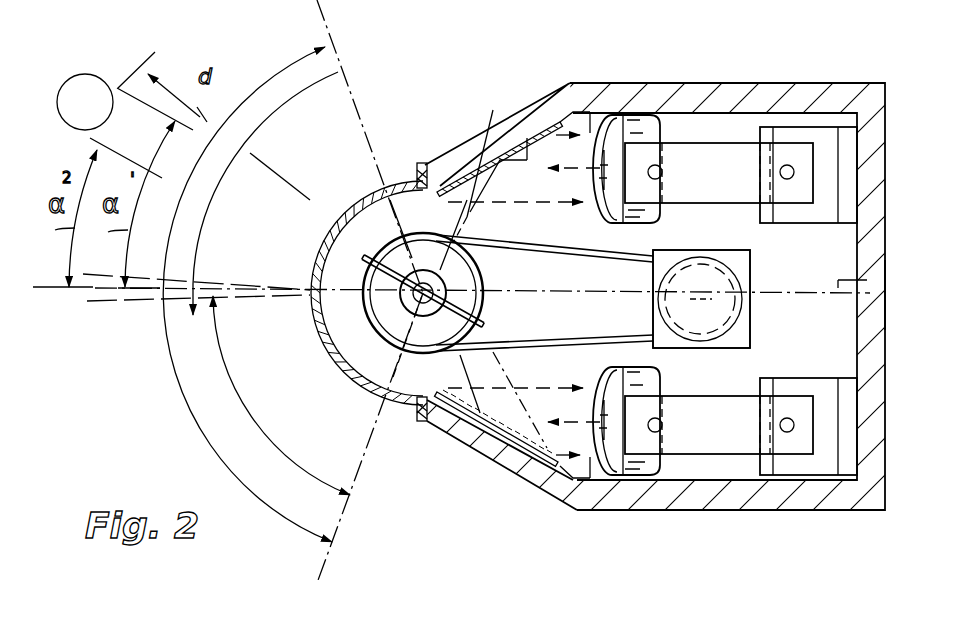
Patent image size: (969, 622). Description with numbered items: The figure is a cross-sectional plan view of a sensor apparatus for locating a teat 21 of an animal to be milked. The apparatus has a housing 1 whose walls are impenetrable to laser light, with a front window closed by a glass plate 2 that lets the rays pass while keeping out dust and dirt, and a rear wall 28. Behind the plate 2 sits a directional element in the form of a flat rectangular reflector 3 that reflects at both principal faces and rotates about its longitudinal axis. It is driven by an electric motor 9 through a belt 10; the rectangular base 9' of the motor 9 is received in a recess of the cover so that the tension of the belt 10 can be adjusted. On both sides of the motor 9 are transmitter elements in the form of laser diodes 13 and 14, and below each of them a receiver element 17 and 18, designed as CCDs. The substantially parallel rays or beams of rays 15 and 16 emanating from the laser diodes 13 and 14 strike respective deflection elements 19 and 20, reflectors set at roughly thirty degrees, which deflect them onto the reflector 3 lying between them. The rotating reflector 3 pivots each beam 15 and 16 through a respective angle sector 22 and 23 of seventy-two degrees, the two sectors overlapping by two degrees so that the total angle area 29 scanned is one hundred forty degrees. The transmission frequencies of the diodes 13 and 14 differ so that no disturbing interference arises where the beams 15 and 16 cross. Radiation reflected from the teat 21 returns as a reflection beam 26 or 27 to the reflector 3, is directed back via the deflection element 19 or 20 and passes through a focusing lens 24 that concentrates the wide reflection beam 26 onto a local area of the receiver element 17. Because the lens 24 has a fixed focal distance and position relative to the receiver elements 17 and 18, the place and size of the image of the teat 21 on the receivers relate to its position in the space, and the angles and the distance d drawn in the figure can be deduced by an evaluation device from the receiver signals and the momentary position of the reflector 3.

The housing 1 is at (503, 477).
The glass plate 2 is at (357, 386).
The reflector 3 is at (485, 278).
The electric motor 9 is at (676, 299).
The base of motor 9' is at (723, 299).
The belt 10 is at (613, 257).
The laser diode 13 is at (742, 180).
The laser diode 14 is at (718, 412).
The ray or beam of rays 15 is at (528, 140).
The ray or beam of rays 16 is at (543, 415).
The receiver element 17 is at (828, 205).
The receiver element 18 is at (815, 363).
The deflection element 19 is at (487, 137).
The deflection element 20 is at (460, 443).
The teat 21 is at (86, 74).
The angle sector 22 is at (220, 183).
The angle sector 23 is at (243, 403).
The lens 24 is at (642, 118).
The reflection beam 26 is at (598, 110).
The reflection beam 27 is at (557, 467).
The rear wall 28 is at (848, 295).
The total angle area 29 is at (170, 355).